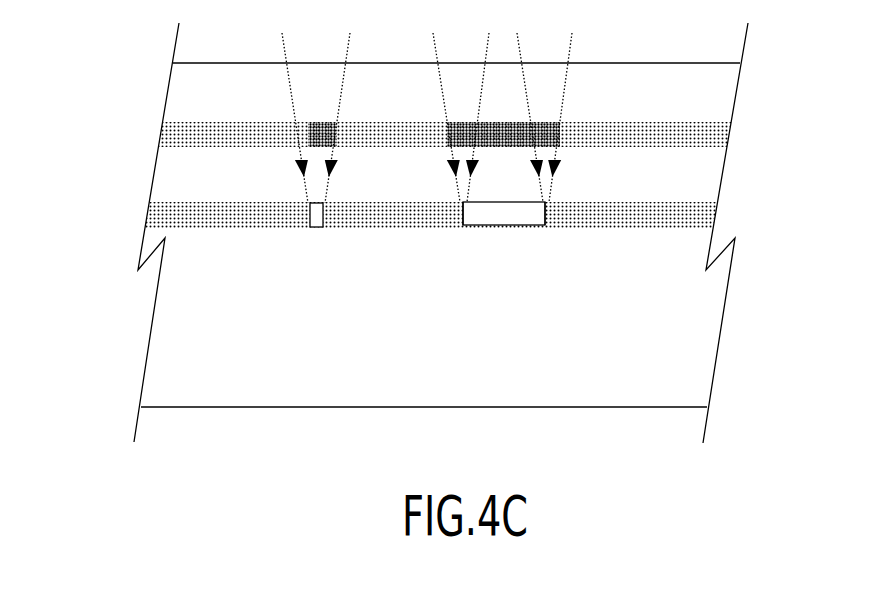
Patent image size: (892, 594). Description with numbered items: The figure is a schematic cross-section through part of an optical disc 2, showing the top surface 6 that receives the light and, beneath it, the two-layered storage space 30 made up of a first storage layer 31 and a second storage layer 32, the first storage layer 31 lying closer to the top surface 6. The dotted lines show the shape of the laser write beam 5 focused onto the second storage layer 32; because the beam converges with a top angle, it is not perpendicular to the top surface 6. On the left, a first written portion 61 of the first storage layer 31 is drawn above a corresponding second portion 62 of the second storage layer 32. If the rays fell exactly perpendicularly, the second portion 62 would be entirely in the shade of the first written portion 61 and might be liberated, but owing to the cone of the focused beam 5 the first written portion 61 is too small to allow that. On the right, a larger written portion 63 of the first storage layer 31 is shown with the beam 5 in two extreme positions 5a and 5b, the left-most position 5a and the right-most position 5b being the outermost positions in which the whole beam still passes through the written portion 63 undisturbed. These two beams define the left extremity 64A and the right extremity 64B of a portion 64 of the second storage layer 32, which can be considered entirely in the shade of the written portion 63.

The optical disc 2 is at (104, 128).
The optical write beam 5 is at (303, 110).
The left-hand extreme position of the laser beam 5a is at (449, 110).
The right-hand extreme position of the laser beam 5b is at (547, 110).
The top surface 6 is at (673, 63).
The two-layered storage space 30 is at (501, 176).
The first storage layer 31 is at (750, 135).
The second storage layer 32 is at (475, 217).
The first written portion 61 is at (320, 122).
The second portion 62 is at (315, 228).
The written portion 63 is at (505, 123).
The portion of the second storage layer 64 is at (507, 225).
The left extremity 64A is at (463, 213).
The right extremity 64B is at (547, 213).